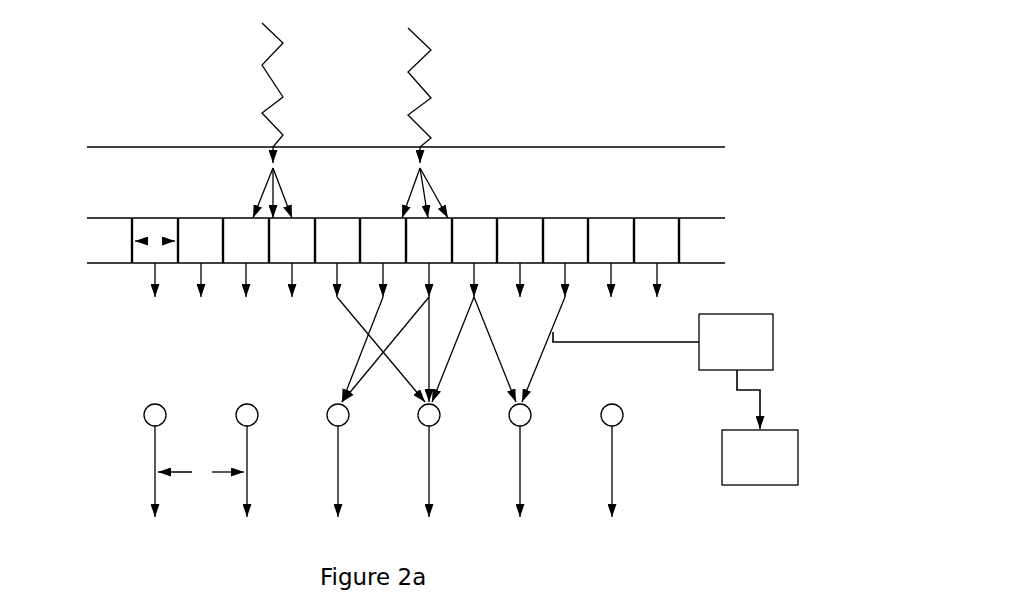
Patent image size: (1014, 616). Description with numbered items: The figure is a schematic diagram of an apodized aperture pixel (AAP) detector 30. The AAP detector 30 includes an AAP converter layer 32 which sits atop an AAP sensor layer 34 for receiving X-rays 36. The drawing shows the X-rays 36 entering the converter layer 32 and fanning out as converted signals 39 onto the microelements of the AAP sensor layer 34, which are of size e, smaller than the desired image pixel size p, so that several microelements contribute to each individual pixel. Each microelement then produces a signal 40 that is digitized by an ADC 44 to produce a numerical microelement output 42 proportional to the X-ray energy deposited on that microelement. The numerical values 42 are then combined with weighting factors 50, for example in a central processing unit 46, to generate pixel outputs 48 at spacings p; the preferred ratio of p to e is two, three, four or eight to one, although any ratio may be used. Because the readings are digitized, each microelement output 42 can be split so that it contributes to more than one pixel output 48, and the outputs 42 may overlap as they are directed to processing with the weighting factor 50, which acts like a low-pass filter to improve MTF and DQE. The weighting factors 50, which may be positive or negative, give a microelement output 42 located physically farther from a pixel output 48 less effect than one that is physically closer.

The AAP detector 30 is at (611, 85).
The AAP converter layer 32 is at (708, 183).
The AAP sensor layer 34 is at (705, 241).
The X-rays 36 is at (283, 43).
The light photons emitted by scintillator 39 is at (285, 181).
The pixel output signals 40 is at (669, 252).
The microelement output 42 is at (152, 270).
The ADC 44 is at (699, 350).
The central processing unit 46 is at (735, 476).
The pixel outputs 48 is at (615, 477).
The weighting factors 50 is at (156, 404).